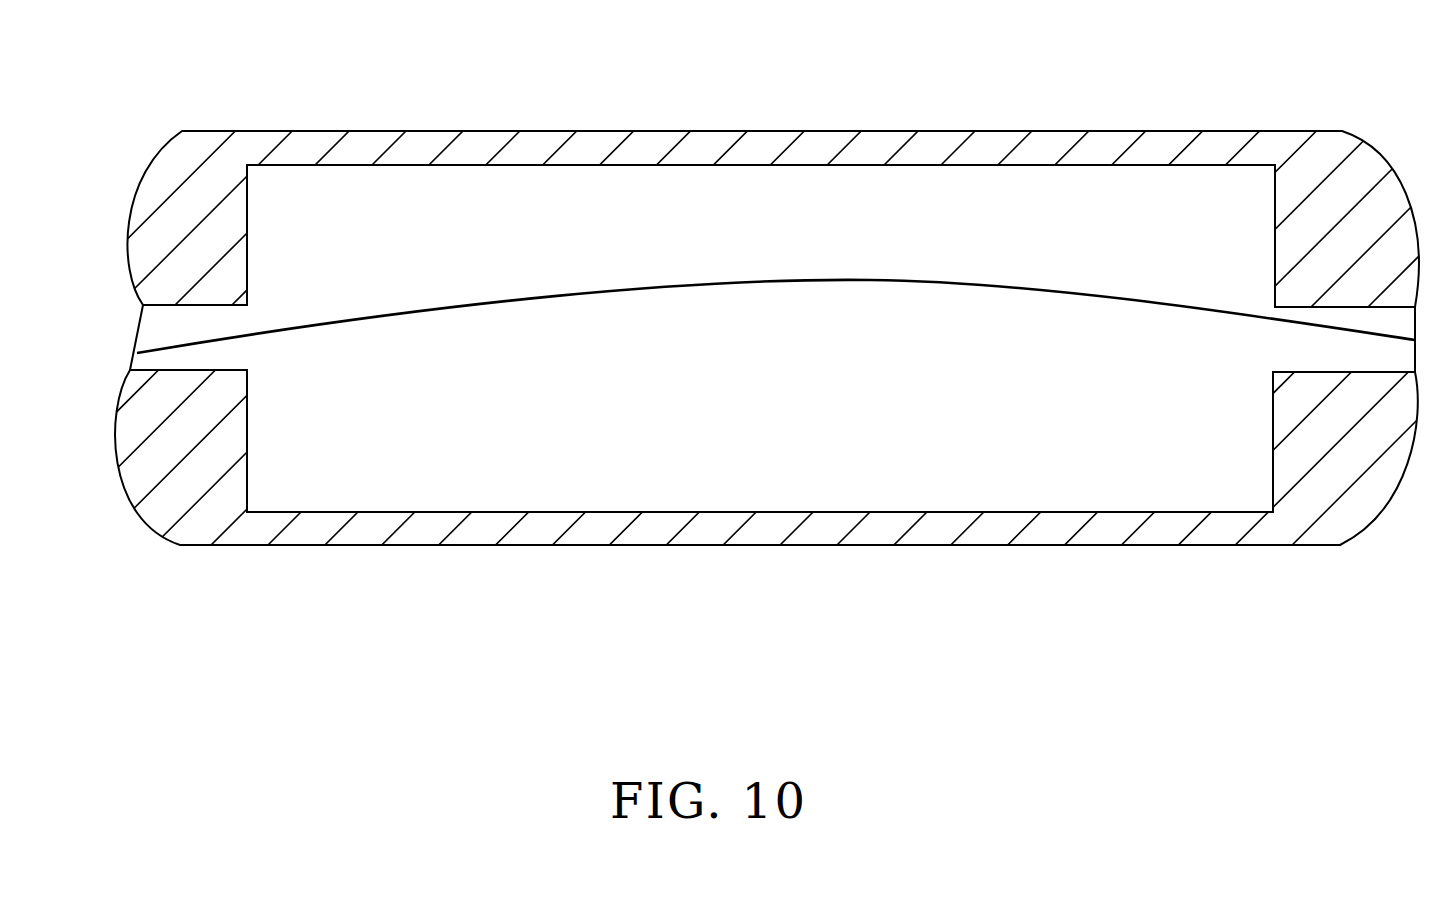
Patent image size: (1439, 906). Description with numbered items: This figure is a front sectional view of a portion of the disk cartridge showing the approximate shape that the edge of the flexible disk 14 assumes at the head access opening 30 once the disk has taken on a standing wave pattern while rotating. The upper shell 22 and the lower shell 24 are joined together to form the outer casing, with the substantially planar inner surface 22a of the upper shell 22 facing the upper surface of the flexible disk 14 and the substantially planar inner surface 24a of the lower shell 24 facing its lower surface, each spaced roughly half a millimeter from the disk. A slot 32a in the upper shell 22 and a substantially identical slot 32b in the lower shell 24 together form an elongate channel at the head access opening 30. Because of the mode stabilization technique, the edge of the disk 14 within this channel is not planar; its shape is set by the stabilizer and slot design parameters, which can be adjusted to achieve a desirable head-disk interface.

The flexible disk 14 is at (775, 285).
The upper shell 22 is at (143, 185).
The inner surface of the upper shell 22a is at (225, 303).
The lower shell 24 is at (157, 463).
The inner surface of the lower shell 24a is at (1302, 367).
The head access opening 30 is at (955, 415).
The slot in the upper shell 32a is at (1273, 270).
The slot in the lower shell 32b is at (247, 440).